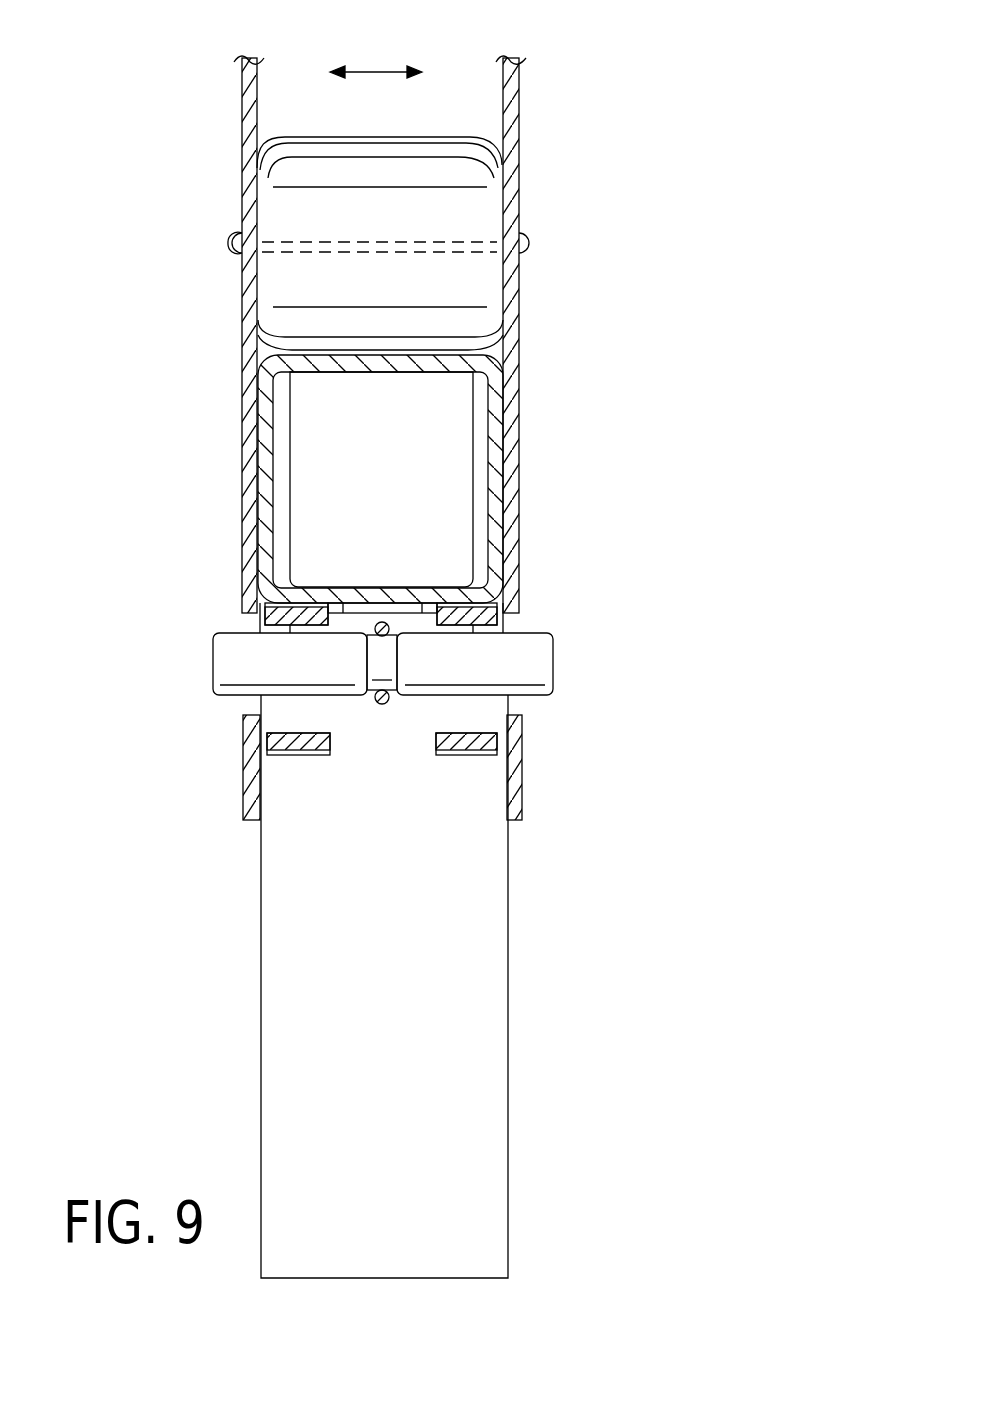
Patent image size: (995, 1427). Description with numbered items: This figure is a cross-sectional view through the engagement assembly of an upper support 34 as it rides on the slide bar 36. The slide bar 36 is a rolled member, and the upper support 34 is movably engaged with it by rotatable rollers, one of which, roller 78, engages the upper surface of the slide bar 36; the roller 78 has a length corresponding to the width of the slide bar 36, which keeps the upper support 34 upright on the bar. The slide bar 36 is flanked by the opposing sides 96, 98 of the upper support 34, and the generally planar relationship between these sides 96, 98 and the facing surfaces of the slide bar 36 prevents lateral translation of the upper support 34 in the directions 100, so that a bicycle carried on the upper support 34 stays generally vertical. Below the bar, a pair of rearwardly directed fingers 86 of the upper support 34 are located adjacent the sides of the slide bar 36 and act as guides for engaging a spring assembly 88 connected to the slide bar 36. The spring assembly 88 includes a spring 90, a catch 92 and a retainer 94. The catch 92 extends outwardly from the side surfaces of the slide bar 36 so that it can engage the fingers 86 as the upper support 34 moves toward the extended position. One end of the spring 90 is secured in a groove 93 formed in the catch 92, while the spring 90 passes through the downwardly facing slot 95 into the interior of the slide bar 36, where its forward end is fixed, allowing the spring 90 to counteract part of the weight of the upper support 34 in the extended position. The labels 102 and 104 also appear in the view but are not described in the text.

The upper support 34 is at (555, 298).
The slide bar 36 is at (268, 472).
The roller 78 is at (472, 135).
The finger 86 is at (248, 769).
The spring assembly 88 is at (700, 657).
The spring 90 is at (380, 705).
The catch 92 is at (548, 657).
The groove 93 is at (328, 740).
The retainer 94 is at (467, 738).
The slot 95 is at (420, 598).
The side 96 is at (243, 434).
The side 98 is at (520, 398).
The directions 100 is at (377, 68).
The left clamp jaw 102 is at (183, 661).
The right clamp jaw 104 is at (567, 677).